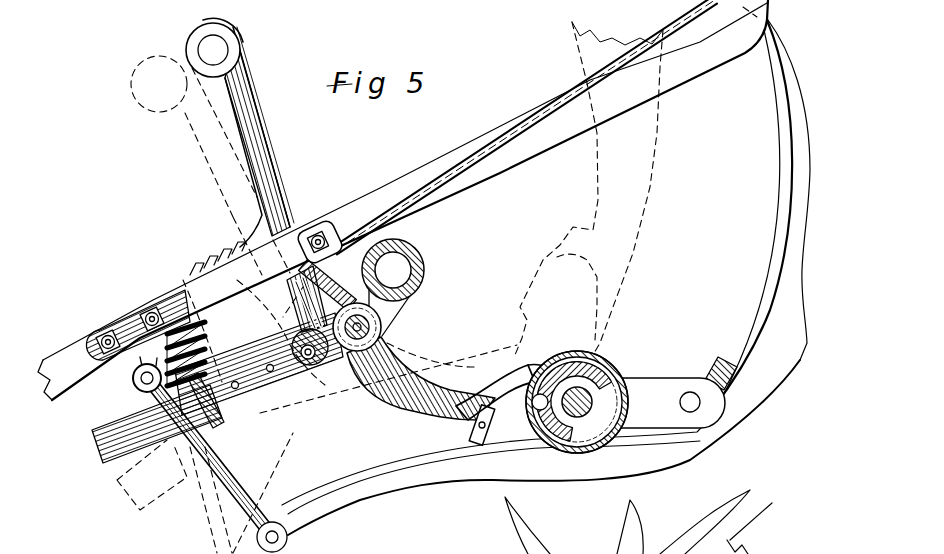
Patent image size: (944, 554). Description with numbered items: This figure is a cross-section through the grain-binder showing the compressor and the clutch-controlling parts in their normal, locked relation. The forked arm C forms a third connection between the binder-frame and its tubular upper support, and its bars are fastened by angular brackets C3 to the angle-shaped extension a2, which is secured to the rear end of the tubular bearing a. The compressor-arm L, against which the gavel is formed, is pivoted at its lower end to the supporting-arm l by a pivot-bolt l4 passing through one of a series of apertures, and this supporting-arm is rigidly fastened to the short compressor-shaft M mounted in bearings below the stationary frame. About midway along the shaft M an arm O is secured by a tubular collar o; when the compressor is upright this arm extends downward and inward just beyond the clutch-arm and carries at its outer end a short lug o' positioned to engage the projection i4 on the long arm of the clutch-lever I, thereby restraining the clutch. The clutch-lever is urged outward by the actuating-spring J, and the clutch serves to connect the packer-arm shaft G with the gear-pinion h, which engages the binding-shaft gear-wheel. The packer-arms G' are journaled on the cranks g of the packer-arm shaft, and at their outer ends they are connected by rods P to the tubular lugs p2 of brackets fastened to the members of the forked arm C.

The forked arm C is at (403, 200).
The angular bracket C3 is at (326, 229).
The compressor-arm L is at (262, 146).
The supporting-arm l is at (268, 384).
The pivot-bolt l4 is at (287, 346).
The tubular lug p2 is at (136, 383).
The connecting-rod P is at (218, 467).
The tubular bearing a is at (401, 286).
The angular extension a2 is at (328, 283).
The compressor-shaft M is at (372, 326).
The arm O is at (432, 385).
The tubular collar o is at (348, 358).
The clutch-lever I is at (512, 375).
The projection i4 is at (470, 414).
The lug o' is at (496, 425).
The actuating-spring J is at (560, 372).
The gear-pinion h is at (622, 376).
The crank g is at (695, 380).
The packer-arm shaft G is at (577, 451).
The packer-arm G' is at (546, 282).